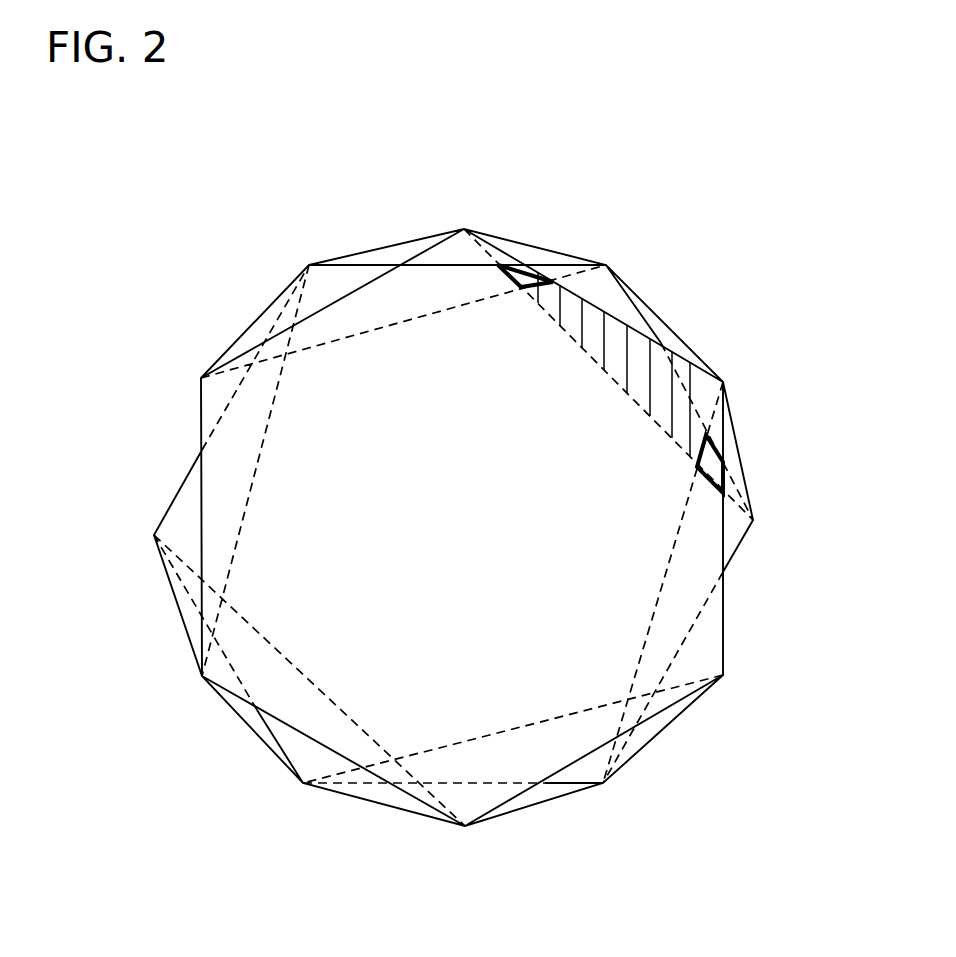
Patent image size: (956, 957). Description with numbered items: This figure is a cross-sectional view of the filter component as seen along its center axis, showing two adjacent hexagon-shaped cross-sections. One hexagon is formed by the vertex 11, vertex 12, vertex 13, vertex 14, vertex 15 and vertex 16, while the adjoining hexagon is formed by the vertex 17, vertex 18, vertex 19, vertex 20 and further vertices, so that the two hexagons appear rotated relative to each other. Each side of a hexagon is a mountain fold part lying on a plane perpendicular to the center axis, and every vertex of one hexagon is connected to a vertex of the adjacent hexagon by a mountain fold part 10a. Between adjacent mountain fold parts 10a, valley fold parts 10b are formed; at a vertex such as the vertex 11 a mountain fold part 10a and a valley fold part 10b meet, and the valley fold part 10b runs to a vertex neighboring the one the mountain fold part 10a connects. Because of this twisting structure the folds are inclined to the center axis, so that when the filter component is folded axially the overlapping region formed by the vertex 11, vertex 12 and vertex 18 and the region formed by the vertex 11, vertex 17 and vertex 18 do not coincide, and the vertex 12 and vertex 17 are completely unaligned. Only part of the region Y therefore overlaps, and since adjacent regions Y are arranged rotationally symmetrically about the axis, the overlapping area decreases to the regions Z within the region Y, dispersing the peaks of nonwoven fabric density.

The mountain fold part 10a is at (540, 248).
The valley fold part 10b is at (405, 322).
The vertex 11 is at (464, 229).
The vertex 12 is at (723, 382).
The vertex 13 is at (723, 675).
The vertex 14 is at (465, 826).
The vertex 15 is at (202, 676).
The vertex 16 is at (201, 378).
The vertex 17 is at (606, 265).
The vertex 18 is at (753, 520).
The vertex 19 is at (603, 783).
The vertex 20 is at (303, 783).
The region Y is at (632, 320).
The region Z is at (553, 282).